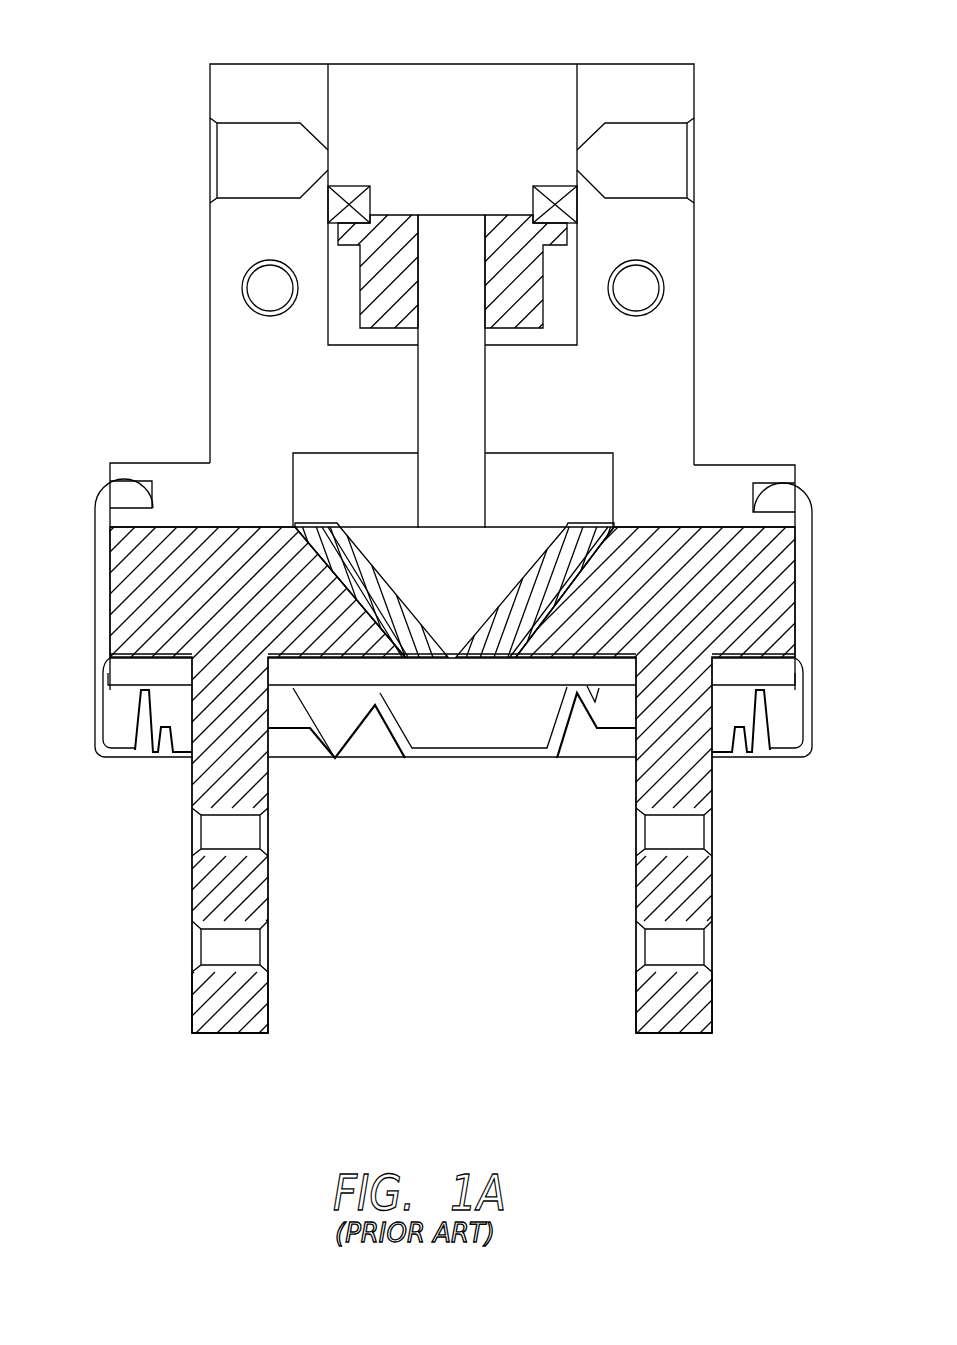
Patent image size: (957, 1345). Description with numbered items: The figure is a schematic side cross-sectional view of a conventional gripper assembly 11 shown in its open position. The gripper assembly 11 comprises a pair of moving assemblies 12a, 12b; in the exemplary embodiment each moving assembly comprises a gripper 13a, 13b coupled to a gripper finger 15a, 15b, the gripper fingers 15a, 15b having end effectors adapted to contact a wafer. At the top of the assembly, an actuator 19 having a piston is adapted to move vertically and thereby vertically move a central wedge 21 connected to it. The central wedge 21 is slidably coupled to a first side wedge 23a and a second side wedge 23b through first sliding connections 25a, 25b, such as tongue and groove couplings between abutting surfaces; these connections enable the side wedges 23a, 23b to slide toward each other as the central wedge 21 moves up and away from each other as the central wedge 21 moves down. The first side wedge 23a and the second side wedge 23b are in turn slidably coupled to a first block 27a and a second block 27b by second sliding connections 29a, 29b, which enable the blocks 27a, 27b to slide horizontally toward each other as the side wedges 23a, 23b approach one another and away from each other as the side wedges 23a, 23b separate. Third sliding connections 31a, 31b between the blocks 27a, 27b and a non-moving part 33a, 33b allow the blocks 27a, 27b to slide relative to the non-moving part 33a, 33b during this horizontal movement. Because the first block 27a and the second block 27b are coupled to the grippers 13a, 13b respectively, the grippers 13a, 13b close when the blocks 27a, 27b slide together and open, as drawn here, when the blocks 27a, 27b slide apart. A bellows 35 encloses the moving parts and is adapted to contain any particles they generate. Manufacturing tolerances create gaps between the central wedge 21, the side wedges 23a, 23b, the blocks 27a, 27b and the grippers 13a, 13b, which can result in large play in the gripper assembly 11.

The gripper assembly 11 is at (168, 53).
The actuator 19 is at (328, 345).
The central wedge 21 is at (395, 525).
The first side wedge 23a is at (380, 605).
The second side wedge 23b is at (530, 593).
The first sliding connection 25a is at (365, 555).
The first sliding connection 25b is at (515, 585).
The first block 27a is at (143, 613).
The second block 27b is at (750, 620).
The second sliding connection 29a is at (362, 615).
The second sliding connection 29b is at (553, 608).
The third sliding connection 31a is at (130, 540).
The third sliding connection 31b is at (740, 525).
The non-moving part 33a is at (178, 462).
The non-moving part 33b is at (722, 463).
The bellows 35 is at (100, 757).
The gripper 13a is at (192, 782).
The gripper 13b is at (712, 782).
The moving assembly 12a is at (288, 786).
The moving assembly 12b is at (612, 781).
The gripper finger 15a is at (212, 1035).
The gripper finger 15b is at (693, 1035).